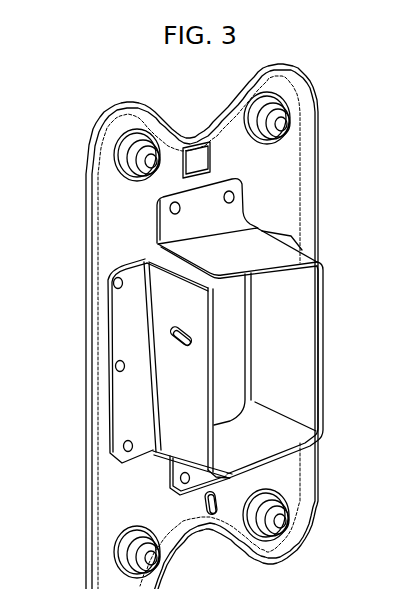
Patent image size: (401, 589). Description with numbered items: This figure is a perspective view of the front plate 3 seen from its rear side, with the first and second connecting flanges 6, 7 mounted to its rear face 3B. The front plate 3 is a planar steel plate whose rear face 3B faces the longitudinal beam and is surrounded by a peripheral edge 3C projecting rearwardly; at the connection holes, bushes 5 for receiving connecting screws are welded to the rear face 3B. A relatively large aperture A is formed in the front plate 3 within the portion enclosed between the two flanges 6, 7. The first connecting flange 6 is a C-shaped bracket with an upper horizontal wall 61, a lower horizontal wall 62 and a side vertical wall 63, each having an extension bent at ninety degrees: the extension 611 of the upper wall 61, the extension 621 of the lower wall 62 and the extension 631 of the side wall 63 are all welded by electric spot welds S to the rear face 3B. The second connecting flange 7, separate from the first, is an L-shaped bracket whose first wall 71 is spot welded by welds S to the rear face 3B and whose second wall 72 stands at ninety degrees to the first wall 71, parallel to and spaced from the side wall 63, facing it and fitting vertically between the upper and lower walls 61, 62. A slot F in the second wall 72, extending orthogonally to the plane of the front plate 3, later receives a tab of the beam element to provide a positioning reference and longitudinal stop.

The front plate 3 is at (323, 128).
The rear face 3B is at (107, 206).
The peripheral edge 3C is at (88, 287).
The bushes 5 is at (149, 152).
The first connecting flange 6 is at (212, 340).
The upper horizontal wall 61 is at (272, 225).
The extension of upper wall 611 is at (212, 230).
The extension of side wall 631 is at (294, 238).
The lower horizontal wall 62 is at (197, 454).
The extension of lower wall 621 is at (180, 463).
The side vertical wall 63 is at (298, 368).
The second connecting flange 7 is at (115, 351).
The first wall 71 is at (121, 408).
The second wall 72 is at (171, 382).
The electric spot welds S is at (227, 196).
The slot F is at (180, 320).
The aperture A is at (246, 294).